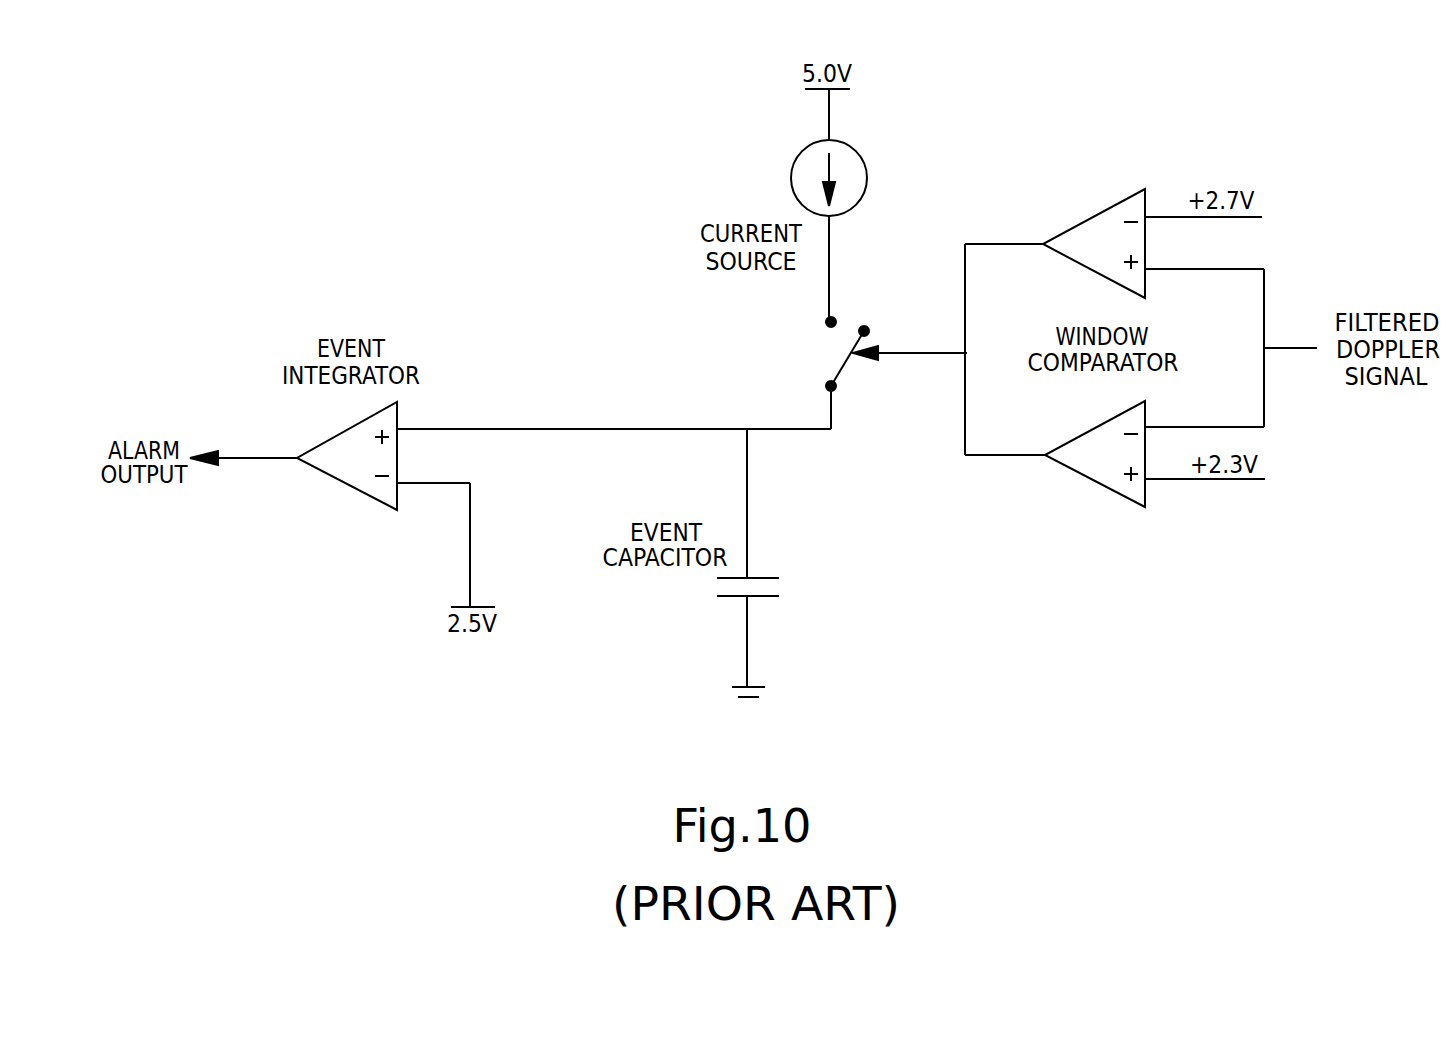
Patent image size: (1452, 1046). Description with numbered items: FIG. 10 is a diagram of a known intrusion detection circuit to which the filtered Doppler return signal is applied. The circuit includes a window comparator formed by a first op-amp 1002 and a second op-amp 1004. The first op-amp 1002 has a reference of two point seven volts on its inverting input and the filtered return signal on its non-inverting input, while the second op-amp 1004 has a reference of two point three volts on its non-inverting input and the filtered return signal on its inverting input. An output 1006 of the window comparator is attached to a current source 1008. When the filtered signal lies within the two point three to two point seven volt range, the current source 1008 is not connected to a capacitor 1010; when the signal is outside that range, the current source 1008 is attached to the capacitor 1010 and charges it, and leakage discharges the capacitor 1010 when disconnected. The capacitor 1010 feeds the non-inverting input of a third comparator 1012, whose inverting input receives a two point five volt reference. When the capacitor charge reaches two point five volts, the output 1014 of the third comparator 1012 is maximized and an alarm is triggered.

The first op-amp 1002 is at (1093, 214).
The second op-amp 1004 is at (1095, 483).
The output of the window comparator 1006 is at (907, 350).
The current source 1008 is at (808, 150).
The capacitor 1010 is at (765, 598).
The third comparator 1012 is at (322, 473).
The output of the third comparator 1014 is at (265, 456).